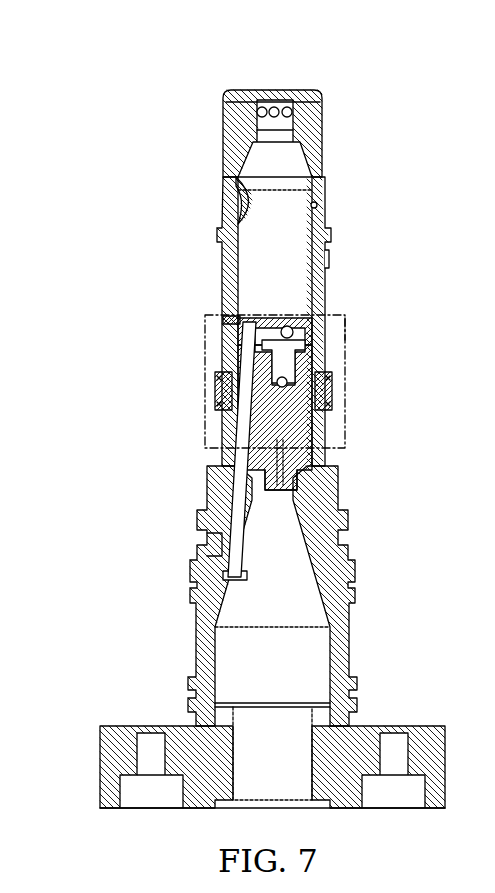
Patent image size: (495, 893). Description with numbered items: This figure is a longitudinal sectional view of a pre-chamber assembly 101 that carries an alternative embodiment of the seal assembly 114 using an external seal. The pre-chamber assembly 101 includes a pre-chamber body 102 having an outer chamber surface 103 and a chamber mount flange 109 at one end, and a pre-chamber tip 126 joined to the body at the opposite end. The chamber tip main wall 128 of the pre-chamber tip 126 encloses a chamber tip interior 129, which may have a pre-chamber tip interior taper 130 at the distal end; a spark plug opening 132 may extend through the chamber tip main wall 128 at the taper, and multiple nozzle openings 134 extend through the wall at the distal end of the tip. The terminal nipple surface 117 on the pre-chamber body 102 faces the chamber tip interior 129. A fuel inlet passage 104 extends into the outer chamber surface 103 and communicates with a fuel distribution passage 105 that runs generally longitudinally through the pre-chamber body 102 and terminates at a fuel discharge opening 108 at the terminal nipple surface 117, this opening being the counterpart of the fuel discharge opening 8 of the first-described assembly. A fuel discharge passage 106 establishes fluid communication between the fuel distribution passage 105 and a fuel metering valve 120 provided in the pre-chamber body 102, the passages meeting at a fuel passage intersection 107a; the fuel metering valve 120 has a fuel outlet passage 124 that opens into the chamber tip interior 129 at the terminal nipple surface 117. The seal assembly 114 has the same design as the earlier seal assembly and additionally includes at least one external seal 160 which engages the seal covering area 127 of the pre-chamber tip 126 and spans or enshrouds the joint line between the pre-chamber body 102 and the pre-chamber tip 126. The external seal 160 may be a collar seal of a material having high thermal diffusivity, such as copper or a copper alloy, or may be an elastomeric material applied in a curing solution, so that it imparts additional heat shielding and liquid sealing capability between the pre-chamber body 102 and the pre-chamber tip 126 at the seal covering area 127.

The pre-chamber assembly 101 is at (168, 77).
The pre-chamber body 102 is at (196, 497).
The outer chamber surface 103 is at (333, 466).
The fuel inlet passage 104 is at (212, 561).
The fuel distribution passage 105 is at (213, 540).
The fuel discharge passage 106 is at (263, 423).
The fuel passage intersection 107a is at (247, 390).
The fuel discharge opening 108 is at (250, 318).
The chamber mount flange 109 is at (120, 726).
The seal assembly 114 is at (347, 363).
The terminal nipple surface 117 is at (238, 317).
The fuel metering valve 120 is at (284, 503).
The fuel outlet passage 124 is at (298, 333).
The pre-chamber tip 126 is at (222, 253).
The seal covering area 127 is at (222, 386).
The chamber tip main wall 128 is at (327, 260).
The chamber tip interior 129 is at (316, 206).
The pre-chamber tip interior taper 130 is at (302, 158).
The spark plug opening 132 is at (236, 186).
The nozzle openings 134 is at (300, 106).
The external seal 160 is at (346, 397).
The fuel discharge opening 8 is at (346, 330).